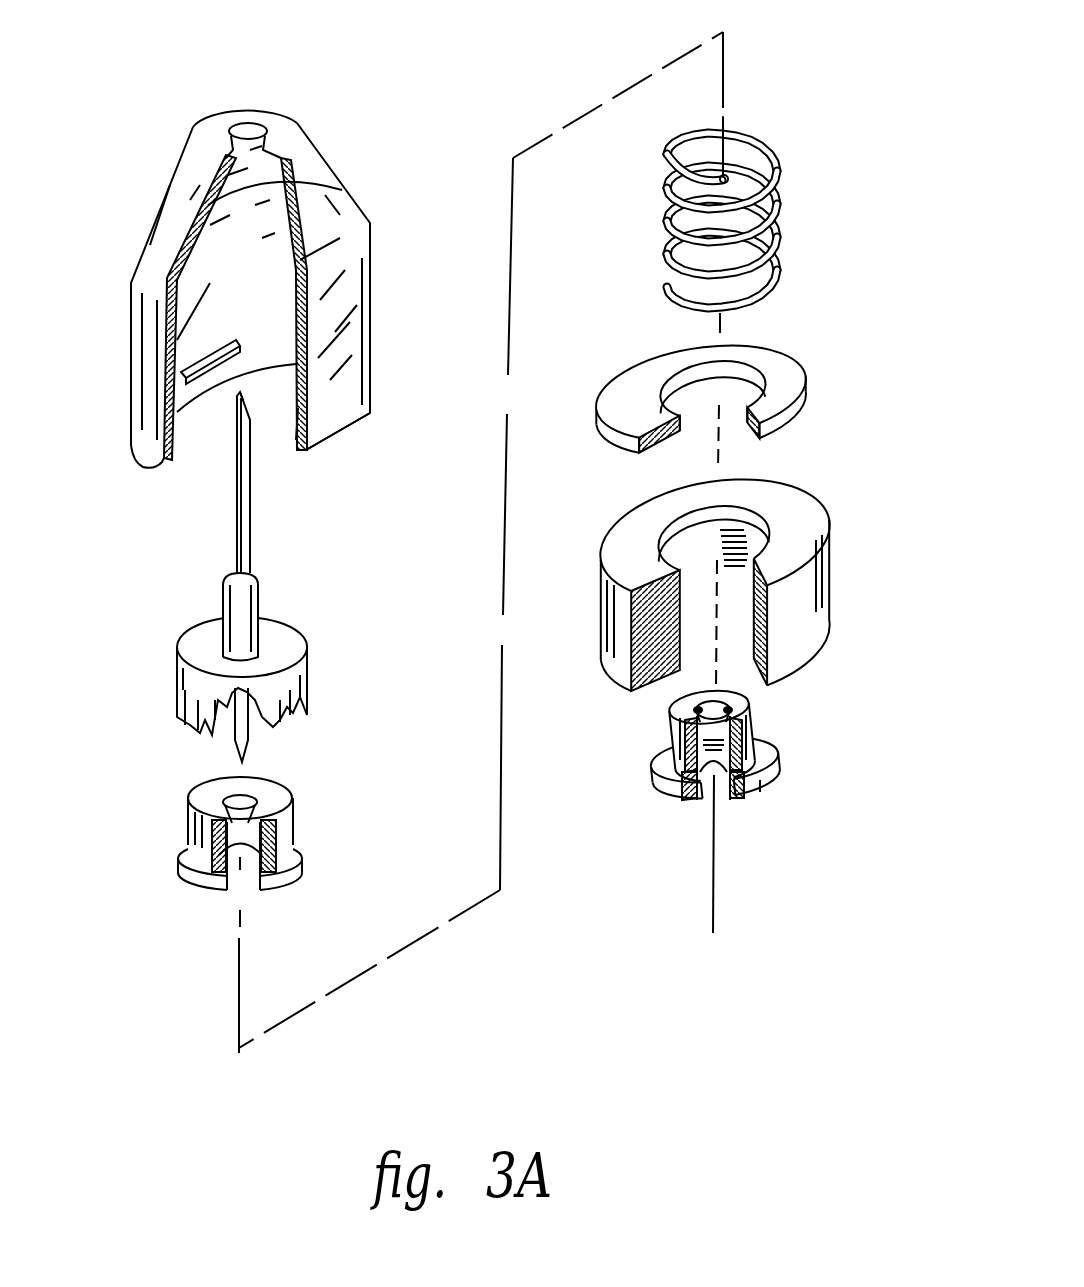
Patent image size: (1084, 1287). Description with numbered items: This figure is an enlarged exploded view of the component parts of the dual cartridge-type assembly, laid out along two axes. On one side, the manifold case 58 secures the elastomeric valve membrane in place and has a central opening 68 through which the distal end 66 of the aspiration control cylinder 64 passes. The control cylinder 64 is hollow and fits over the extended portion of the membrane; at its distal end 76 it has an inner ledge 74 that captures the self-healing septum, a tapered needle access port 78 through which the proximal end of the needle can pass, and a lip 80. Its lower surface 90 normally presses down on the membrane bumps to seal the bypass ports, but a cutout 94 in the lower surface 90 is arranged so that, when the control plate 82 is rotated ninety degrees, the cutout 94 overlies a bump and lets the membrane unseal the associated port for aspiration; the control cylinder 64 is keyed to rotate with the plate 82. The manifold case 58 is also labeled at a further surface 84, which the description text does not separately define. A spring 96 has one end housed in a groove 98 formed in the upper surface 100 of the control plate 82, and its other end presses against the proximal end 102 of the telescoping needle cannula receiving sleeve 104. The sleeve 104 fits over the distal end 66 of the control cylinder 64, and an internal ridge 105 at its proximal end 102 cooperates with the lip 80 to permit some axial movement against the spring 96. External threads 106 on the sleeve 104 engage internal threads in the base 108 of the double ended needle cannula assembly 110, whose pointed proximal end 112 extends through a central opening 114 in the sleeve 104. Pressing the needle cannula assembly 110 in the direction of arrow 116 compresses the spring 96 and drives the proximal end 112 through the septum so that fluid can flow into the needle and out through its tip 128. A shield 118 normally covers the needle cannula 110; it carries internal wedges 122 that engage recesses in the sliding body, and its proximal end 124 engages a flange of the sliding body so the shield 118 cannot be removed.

The manifold case 58 is at (732, 582).
The aspiration control cylinder 64 is at (728, 780).
The distal end 66 is at (675, 745).
The central opening 68 is at (672, 517).
The inner ledge 74 is at (718, 790).
The distal end 76 is at (740, 708).
The tapered needle access port 78 is at (700, 706).
The lip 80 is at (752, 730).
The control plate 82 is at (727, 384).
The top surface 84 is at (792, 497).
The lower surface 90 is at (745, 800).
The cutout 94 is at (705, 790).
The spring 96 is at (778, 157).
The groove 98 is at (663, 370).
The upper surface 100 is at (790, 398).
The proximal end 102 is at (267, 890).
The telescoping needle cannula receiving sleeve 104 is at (251, 856).
The internal ridge 105 is at (223, 875).
The external threads 106 is at (193, 818).
The base 108 is at (300, 680).
The double ended needle cannula assembly 110 is at (258, 557).
The pointed proximal end 112 is at (255, 727).
The central opening 114 is at (247, 802).
The arrow 116 is at (420, 612).
The shield 118 is at (355, 176).
The internal wedges 122 is at (207, 372).
The proximal end 124 is at (330, 437).
The tip 128 is at (246, 410).